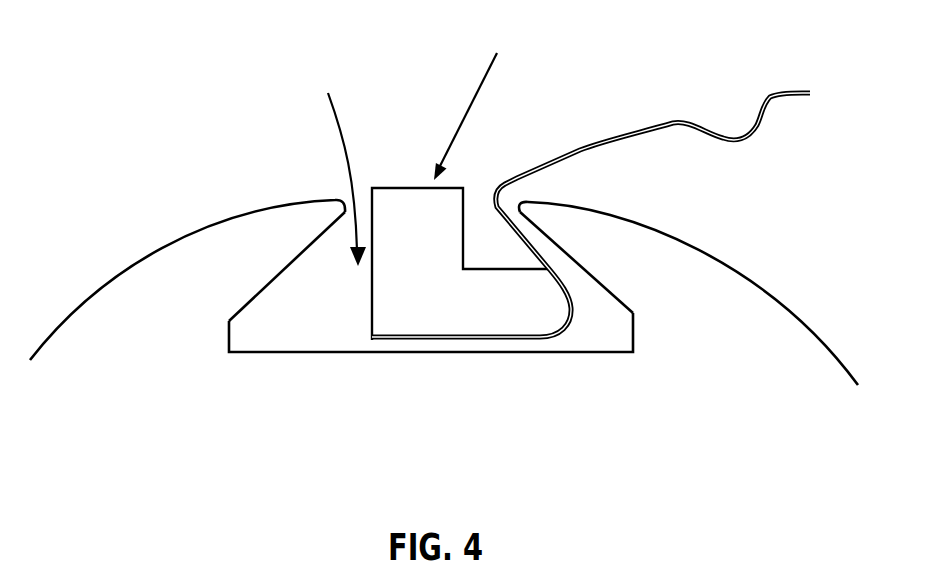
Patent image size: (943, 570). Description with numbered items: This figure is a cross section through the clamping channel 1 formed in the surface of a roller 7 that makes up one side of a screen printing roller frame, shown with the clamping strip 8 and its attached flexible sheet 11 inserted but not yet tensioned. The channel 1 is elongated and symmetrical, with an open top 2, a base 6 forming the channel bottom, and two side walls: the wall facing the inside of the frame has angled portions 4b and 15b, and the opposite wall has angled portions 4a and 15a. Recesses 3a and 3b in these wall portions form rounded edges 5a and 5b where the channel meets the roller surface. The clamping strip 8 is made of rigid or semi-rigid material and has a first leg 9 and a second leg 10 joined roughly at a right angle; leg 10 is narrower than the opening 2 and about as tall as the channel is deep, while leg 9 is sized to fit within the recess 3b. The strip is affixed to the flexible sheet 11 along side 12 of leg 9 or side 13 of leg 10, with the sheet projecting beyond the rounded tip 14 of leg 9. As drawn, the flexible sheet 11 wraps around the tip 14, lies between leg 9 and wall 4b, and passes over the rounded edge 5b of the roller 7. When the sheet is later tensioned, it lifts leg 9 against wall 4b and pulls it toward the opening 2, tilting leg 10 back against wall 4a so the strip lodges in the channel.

The clamping channel 1 is at (339, 161).
The open top 2 is at (360, 193).
The recess 3a is at (280, 323).
The recess 3b is at (608, 333).
The angled wall portion 4a is at (298, 273).
The angled wall portion 4b is at (558, 250).
The rounded edge 5a is at (328, 215).
The rounded edge 5b is at (538, 215).
The base 6 is at (427, 363).
The roller 7 is at (792, 293).
The clamping strip 8 is at (478, 93).
The first leg 9 is at (523, 305).
The second leg 10 is at (425, 232).
The flexible sheet 11 is at (615, 137).
The side of leg 9 12 is at (463, 340).
The side of leg 10 13 is at (353, 330).
The tip 14 is at (575, 292).
The angled wall portion 15a is at (217, 333).
The angled wall portion 15b is at (645, 335).